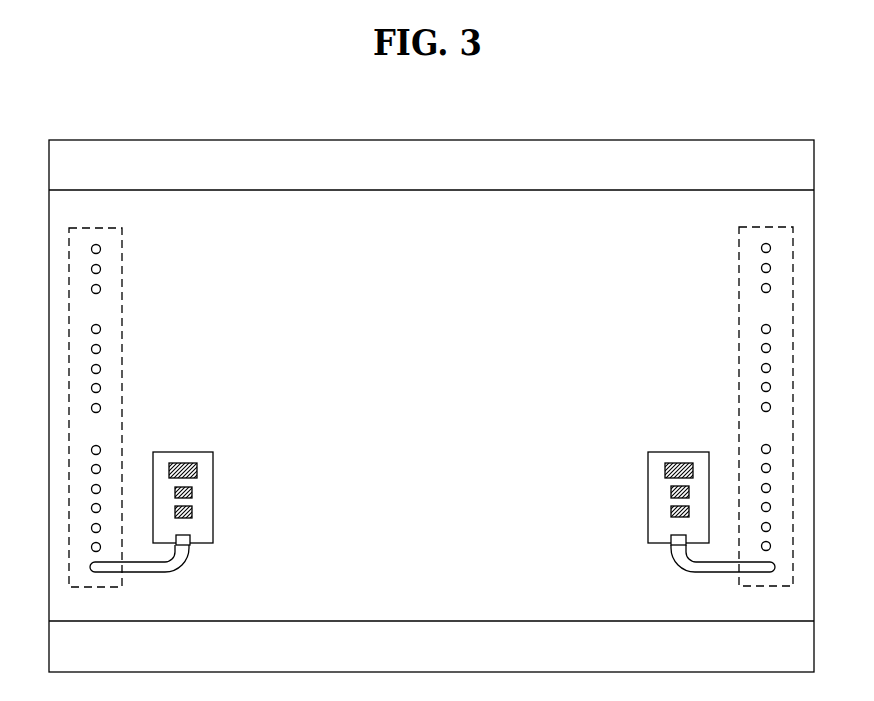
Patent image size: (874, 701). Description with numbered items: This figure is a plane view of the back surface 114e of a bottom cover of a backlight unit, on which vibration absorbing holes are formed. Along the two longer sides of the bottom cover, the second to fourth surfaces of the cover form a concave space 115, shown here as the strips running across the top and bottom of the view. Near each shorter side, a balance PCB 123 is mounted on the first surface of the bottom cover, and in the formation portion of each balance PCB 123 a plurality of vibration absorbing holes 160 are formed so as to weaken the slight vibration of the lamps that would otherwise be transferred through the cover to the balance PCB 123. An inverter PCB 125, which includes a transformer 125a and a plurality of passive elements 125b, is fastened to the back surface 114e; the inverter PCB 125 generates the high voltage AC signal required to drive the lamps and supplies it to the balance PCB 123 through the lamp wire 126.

The back surface of the bottom cover 114e is at (458, 427).
The concave space 115 is at (443, 173).
The balance PCB 123 is at (122, 249).
The vibration absorbing hole 160 is at (100, 289).
The inverter PCB 125 is at (213, 526).
The transformer 125a is at (197, 470).
The passive element 125b is at (192, 492).
The lamp wire 126 is at (163, 568).